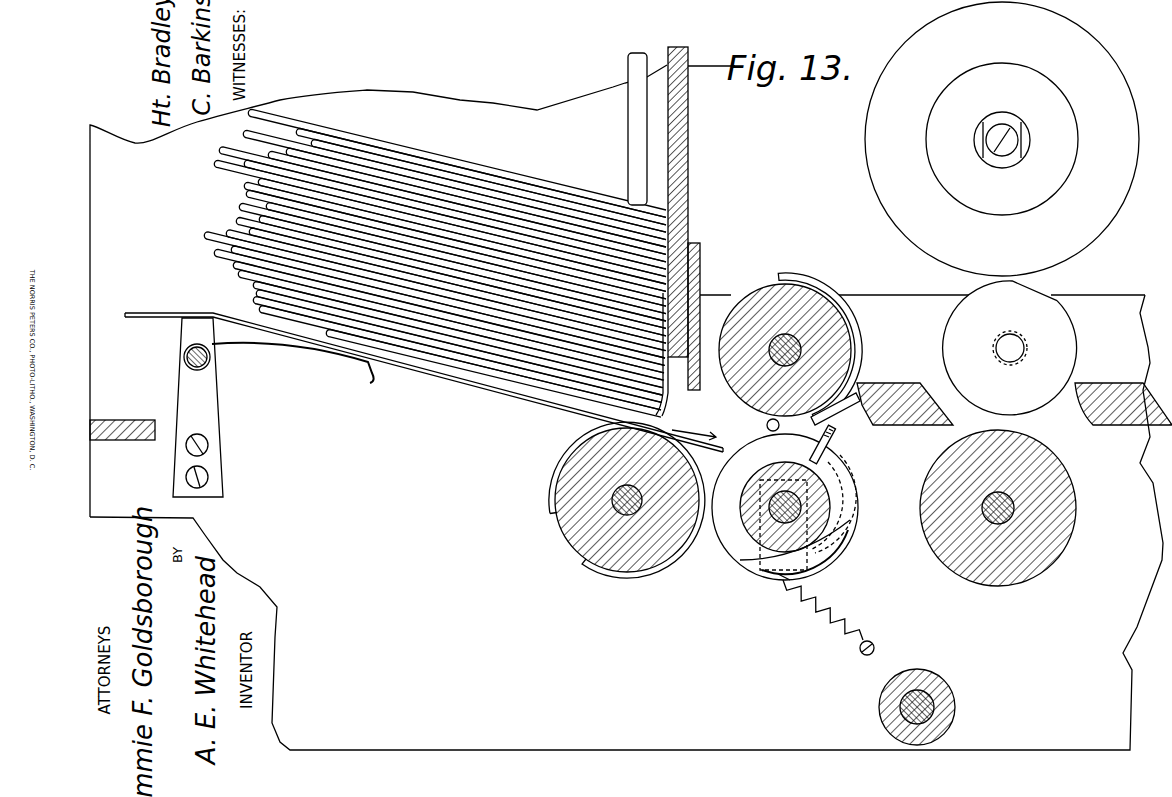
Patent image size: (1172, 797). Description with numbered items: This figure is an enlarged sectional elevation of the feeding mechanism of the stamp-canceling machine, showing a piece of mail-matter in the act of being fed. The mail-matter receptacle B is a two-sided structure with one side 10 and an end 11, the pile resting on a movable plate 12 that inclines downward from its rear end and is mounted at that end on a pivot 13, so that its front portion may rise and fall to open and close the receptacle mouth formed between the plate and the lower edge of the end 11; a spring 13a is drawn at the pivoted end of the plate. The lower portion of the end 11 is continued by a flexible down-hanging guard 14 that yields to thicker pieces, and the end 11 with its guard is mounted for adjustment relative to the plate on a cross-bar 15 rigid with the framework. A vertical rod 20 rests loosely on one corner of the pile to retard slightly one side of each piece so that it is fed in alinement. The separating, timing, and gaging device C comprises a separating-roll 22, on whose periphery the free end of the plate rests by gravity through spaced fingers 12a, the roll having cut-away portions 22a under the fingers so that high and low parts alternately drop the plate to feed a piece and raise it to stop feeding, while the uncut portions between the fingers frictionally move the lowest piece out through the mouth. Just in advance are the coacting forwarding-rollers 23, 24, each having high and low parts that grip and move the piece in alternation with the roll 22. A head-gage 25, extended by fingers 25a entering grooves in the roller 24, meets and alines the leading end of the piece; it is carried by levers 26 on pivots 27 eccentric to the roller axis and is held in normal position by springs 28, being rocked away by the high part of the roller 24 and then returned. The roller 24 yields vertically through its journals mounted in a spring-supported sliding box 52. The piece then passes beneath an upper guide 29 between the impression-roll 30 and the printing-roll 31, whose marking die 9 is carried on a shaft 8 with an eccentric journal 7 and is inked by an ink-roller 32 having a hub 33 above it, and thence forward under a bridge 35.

The receptacle or feed-hopper B is at (435, 263).
The receptacle side 10 is at (514, 115).
The receptacle end 11 is at (688, 126).
The movable plate 12 is at (508, 390).
The spaced fingers 12a is at (707, 432).
The pivot 13 is at (183, 355).
The spring 13a is at (280, 350).
The flexible down-hanging guard 14 is at (672, 403).
The cross-bar 15 is at (700, 256).
The vertical rod 20 is at (628, 67).
The separating-roll 22 is at (627, 500).
The cut-away portions 22a is at (553, 482).
The forwarding-roller 23 is at (806, 282).
The forwarding-roller 24 is at (858, 517).
The head-gage 25 is at (834, 432).
The fingers 25a is at (806, 465).
The levers 26 is at (858, 472).
The pivots 27 is at (847, 548).
The springs 28 is at (816, 620).
The upper guide 29 is at (899, 390).
The impression-roll 30 is at (1058, 462).
The printing-roll 31 is at (1010, 348).
The ink-roller 32 is at (1002, 139).
The hub 33 is at (1004, 112).
The bridge 35 is at (1110, 386).
The vertically-sliding box 52 is at (768, 548).
The journal 7 is at (1013, 366).
The shaft 8 is at (1006, 335).
The marking die or surface 9 is at (1027, 283).
The separating, timing, and gaging device C is at (780, 427).